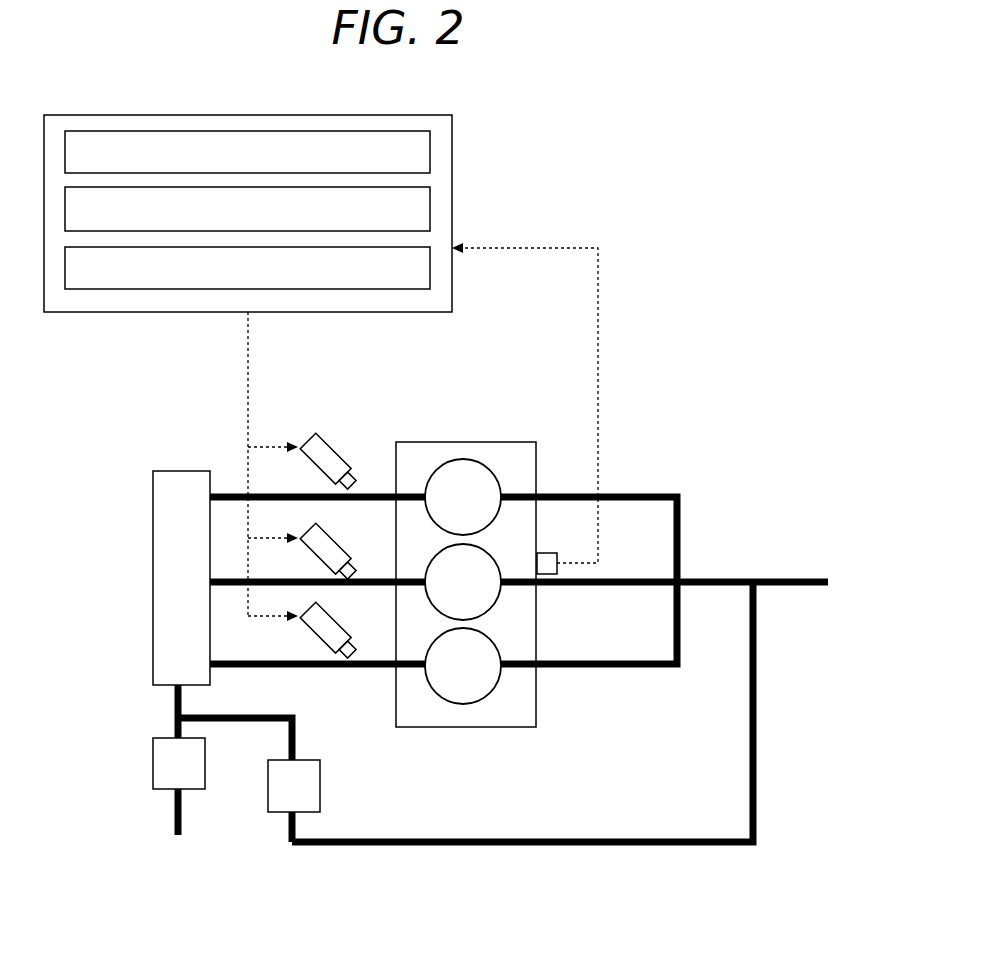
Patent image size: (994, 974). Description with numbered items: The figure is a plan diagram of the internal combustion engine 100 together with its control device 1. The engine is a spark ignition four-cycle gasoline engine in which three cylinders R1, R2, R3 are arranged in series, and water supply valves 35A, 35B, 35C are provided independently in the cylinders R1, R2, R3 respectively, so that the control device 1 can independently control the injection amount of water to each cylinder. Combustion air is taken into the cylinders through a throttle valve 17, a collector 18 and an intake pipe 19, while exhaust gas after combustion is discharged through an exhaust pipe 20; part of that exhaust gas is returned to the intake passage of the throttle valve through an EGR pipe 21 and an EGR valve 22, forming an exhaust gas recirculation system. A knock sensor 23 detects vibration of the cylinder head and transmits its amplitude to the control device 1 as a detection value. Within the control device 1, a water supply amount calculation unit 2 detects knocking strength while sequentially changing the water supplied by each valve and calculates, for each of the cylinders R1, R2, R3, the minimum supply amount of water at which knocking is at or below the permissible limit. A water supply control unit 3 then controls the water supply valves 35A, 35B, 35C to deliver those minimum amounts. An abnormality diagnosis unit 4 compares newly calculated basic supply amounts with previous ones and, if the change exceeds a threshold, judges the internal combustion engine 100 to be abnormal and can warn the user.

The control device 1 is at (266, 340).
The water supply amount calculation unit 2 is at (430, 153).
The water supply control unit 3 is at (430, 220).
The abnormality diagnosis unit 4 is at (430, 278).
The throttle valve 17 is at (150, 767).
The collector 18 is at (152, 578).
The intake pipe 19 is at (297, 667).
The exhaust pipe 20 is at (625, 493).
The EGR pipe 21 is at (553, 845).
The EGR valve 22 is at (275, 797).
The knock sensor 23 is at (555, 575).
The water supply valve 35A is at (337, 450).
The water supply valve 35B is at (335, 547).
The water supply valve 35C is at (337, 627).
The internal combustion engine 100 is at (493, 536).
The cylinder R1 is at (472, 460).
The cylinder R2 is at (492, 608).
The cylinder R3 is at (462, 703).